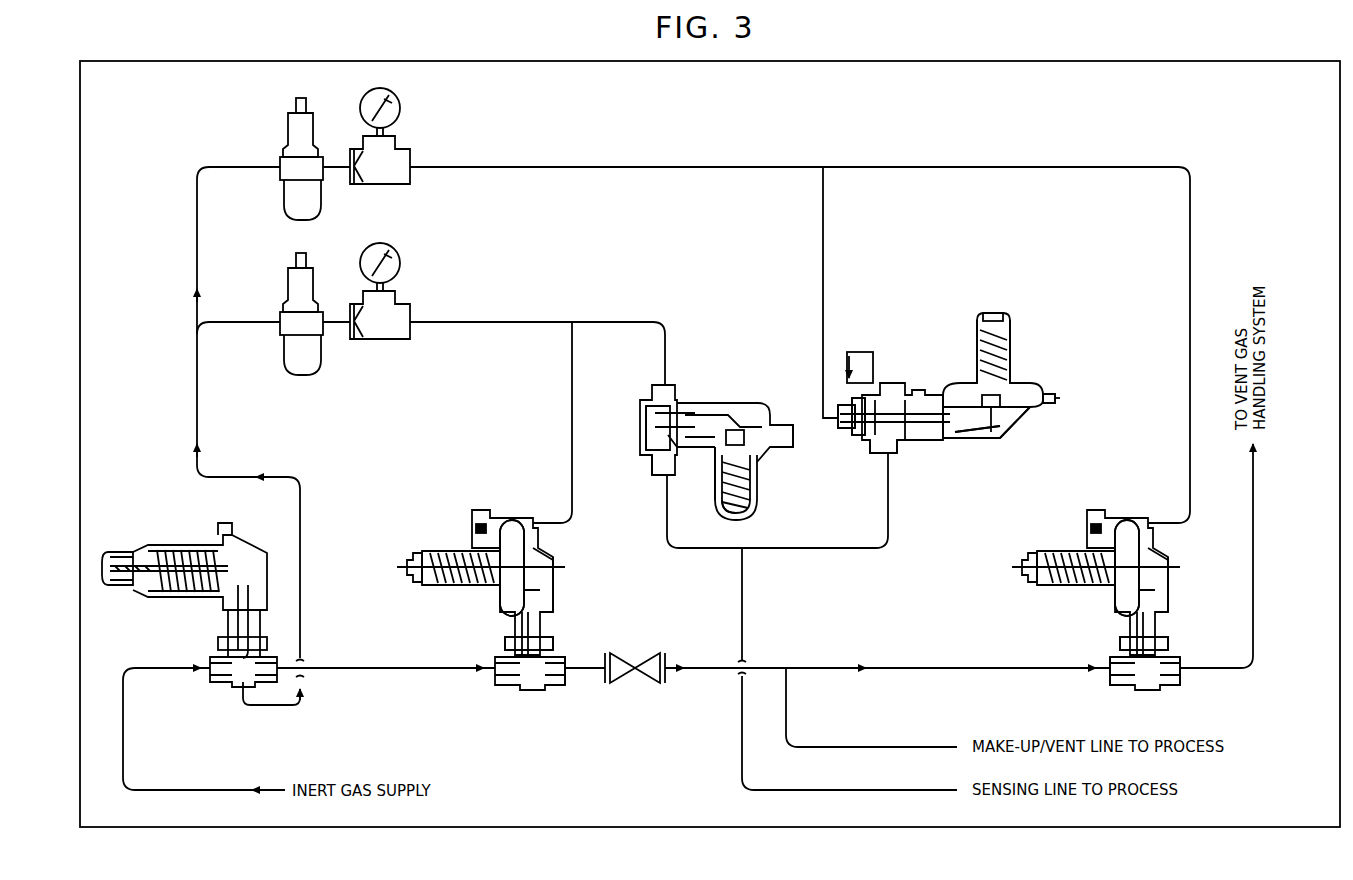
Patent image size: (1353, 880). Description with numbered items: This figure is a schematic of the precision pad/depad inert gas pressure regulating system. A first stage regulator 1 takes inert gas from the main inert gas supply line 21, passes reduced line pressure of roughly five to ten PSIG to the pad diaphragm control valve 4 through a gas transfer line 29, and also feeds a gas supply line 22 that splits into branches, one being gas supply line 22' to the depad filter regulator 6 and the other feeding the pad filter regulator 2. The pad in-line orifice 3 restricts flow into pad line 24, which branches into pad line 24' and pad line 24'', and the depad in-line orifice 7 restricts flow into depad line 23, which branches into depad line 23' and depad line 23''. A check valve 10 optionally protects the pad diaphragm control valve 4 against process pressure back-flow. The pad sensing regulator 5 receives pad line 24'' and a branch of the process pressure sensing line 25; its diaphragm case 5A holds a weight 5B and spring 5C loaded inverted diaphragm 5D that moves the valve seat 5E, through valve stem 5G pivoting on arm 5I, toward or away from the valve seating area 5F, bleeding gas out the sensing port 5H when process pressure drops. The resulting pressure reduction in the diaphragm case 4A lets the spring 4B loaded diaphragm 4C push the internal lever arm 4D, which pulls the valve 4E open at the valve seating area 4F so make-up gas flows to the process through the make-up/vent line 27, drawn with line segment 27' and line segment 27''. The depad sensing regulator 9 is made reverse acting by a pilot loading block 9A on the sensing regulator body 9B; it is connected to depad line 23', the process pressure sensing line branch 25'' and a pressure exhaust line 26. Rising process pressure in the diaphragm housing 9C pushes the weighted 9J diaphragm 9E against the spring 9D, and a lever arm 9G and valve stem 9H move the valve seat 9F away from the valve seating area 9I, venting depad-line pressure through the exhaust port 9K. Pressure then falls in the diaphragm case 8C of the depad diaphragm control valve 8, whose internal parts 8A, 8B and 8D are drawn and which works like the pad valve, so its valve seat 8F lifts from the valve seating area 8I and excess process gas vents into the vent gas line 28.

The first stage regulator 1 is at (218, 540).
The pad filter regulator 2 is at (282, 300).
The pad in-line orifice 3 is at (415, 311).
The pad diaphragm control valve 4 is at (488, 508).
The diaphragm case 4A is at (520, 510).
The internal spring 4B is at (455, 562).
The diaphragm 4C is at (499, 596).
The internal lever arm 4D is at (548, 582).
The valve 4E is at (522, 640).
The valve seating area 4F is at (548, 680).
The pad sensing regulator 5 is at (727, 398).
The diaphragm case 5A is at (768, 452).
The weight 5B is at (722, 453).
The spring 5C is at (740, 503).
The inverted diaphragm 5D is at (752, 428).
The valve seat 5E is at (659, 409).
The valve seating area 5F is at (655, 421).
The valve stem 5G is at (680, 431).
The sensing port 5H is at (660, 479).
The arm 5I is at (715, 408).
The depad filter regulator 6 is at (280, 150).
The depad in-line orifice 7 is at (416, 153).
The depad diaphragm control valve 8 is at (1112, 508).
The regulator stem 8A is at (1150, 639).
The regulator diaphragm housing 8B is at (1170, 584).
The diaphragm case 8C is at (1153, 510).
The regulator bellows 8D is at (1124, 547).
The valve seat 8F is at (1178, 676).
The valve seating area 8I is at (1118, 676).
The depad sensing regulator 9 is at (968, 381).
The pilot loading block 9A is at (873, 456).
The sensing regulator body 9B is at (912, 451).
The diaphragm housing 9C is at (1019, 433).
The spring 9D is at (984, 340).
The diaphragm 9E is at (1066, 379).
The valve seat 9F is at (850, 436).
The lever arm 9G is at (970, 441).
The valve stem 9H is at (928, 434).
The valve seating area 9I is at (860, 438).
The weight 9J is at (1028, 351).
The exhaust port 9K is at (880, 382).
The check valve 10 is at (635, 673).
The main inert gas supply line 21 is at (127, 737).
The gas supply line 22 is at (216, 436).
The gas supply line 22' is at (243, 308).
The depad line 23 is at (756, 138).
The depad line 23' is at (795, 292).
The depad line 23'' is at (1138, 351).
The pad line 24 is at (537, 322).
The pad line 24' is at (535, 422).
The pad line 24'' is at (612, 293).
The process pressure sensing line 25 is at (816, 669).
The process pressure sensing line 25'' is at (777, 527).
The pressure exhaust line 26 is at (855, 347).
The make-up/vent line 27 is at (871, 707).
The make-up line segment 27' is at (675, 701).
The line 27'' is at (948, 642).
The vent gas line 28 is at (1258, 530).
The gas transfer line 29 is at (390, 673).